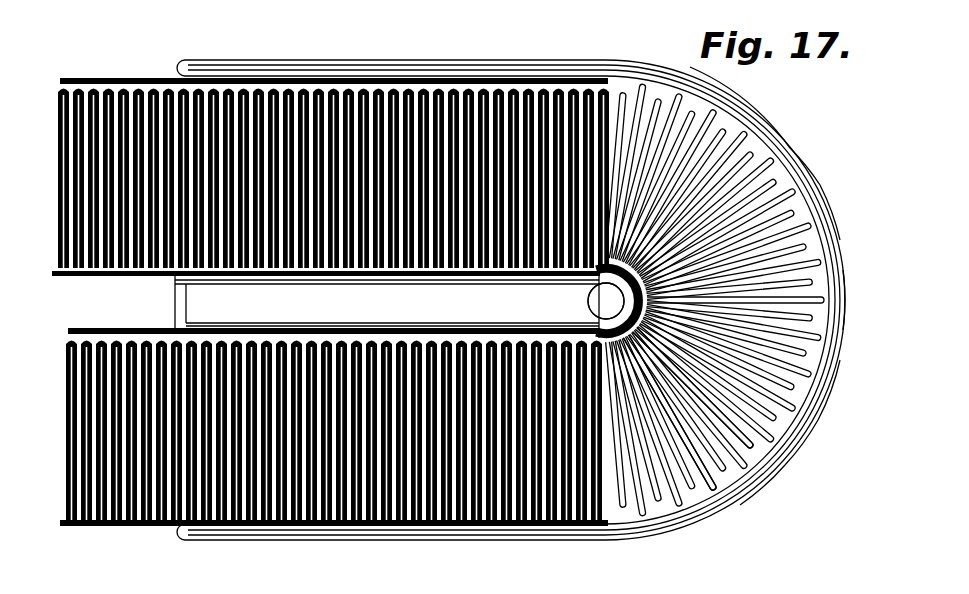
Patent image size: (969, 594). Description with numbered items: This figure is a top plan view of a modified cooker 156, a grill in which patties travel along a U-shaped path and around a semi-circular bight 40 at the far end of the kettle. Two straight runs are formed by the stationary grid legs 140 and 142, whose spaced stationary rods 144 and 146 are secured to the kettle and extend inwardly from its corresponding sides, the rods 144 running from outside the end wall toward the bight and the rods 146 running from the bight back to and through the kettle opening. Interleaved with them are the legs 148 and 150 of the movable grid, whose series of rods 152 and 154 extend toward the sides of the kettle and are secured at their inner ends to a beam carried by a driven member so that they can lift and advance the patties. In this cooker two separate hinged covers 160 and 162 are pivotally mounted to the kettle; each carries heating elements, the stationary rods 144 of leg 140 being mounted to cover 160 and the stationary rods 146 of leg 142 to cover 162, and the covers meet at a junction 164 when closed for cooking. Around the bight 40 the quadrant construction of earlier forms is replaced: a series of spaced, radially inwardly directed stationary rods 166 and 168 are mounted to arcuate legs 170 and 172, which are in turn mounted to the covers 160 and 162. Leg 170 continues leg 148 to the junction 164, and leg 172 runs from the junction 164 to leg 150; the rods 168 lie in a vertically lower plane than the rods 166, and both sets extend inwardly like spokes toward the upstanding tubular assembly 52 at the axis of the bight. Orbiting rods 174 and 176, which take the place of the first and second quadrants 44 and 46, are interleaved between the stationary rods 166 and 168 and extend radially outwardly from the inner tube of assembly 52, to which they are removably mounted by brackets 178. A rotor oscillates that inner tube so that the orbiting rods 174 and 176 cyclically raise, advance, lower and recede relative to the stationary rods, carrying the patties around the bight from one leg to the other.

The semi-circular bight 40 is at (814, 408).
The first quadrant 44 is at (803, 452).
The second quadrant 46 is at (808, 156).
The upstanding tubular assembly 52 is at (574, 300).
The leg of the stationary grid 140 is at (150, 526).
The leg of the stationary grid 142 is at (268, 84).
The stationary rods 144 is at (66, 510).
The stationary rods 146 is at (87, 88).
The leg of the movable grid 148 is at (362, 324).
The leg of the movable grid 150 is at (321, 279).
The rods of the movable grid 152 is at (112, 331).
The rods of the movable grid 154 is at (73, 279).
The cooker 156 is at (488, 54).
The hinged cover 160 is at (416, 527).
The hinged cover 162 is at (542, 62).
The junction 164 is at (838, 300).
The stationary rods 166 is at (702, 512).
The stationary rods 168 is at (818, 228).
The arcuate leg 170 is at (776, 452).
The arcuate leg 172 is at (752, 128).
The orbiting rods 174 is at (754, 486).
The orbiting rods 176 is at (668, 108).
The brackets 178 is at (626, 322).